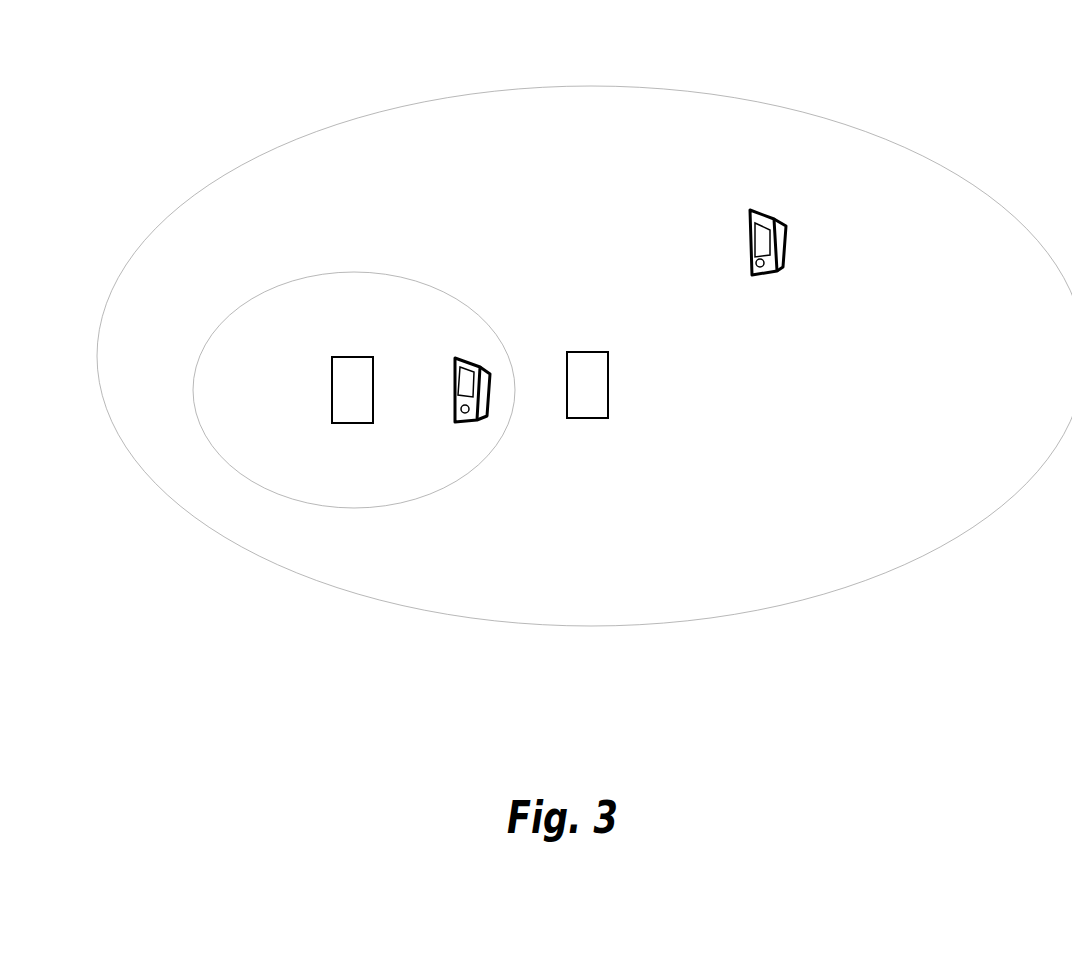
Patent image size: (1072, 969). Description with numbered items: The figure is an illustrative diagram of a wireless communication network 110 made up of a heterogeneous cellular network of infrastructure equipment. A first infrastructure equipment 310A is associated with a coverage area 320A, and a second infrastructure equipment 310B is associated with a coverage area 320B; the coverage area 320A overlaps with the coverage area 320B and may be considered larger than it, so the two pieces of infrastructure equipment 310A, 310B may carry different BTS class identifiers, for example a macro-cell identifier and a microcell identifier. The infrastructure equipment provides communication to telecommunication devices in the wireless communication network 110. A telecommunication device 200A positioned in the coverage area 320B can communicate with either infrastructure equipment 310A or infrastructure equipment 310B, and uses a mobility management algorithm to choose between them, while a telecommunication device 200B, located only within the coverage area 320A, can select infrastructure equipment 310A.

The wireless communication network 110 is at (204, 80).
The telecommunication device 200A is at (456, 362).
The telecommunication device 200B is at (786, 256).
The infrastructure equipment 310A is at (608, 387).
The infrastructure equipment 310B is at (332, 380).
The coverage area 320A is at (802, 600).
The coverage area 320B is at (417, 498).